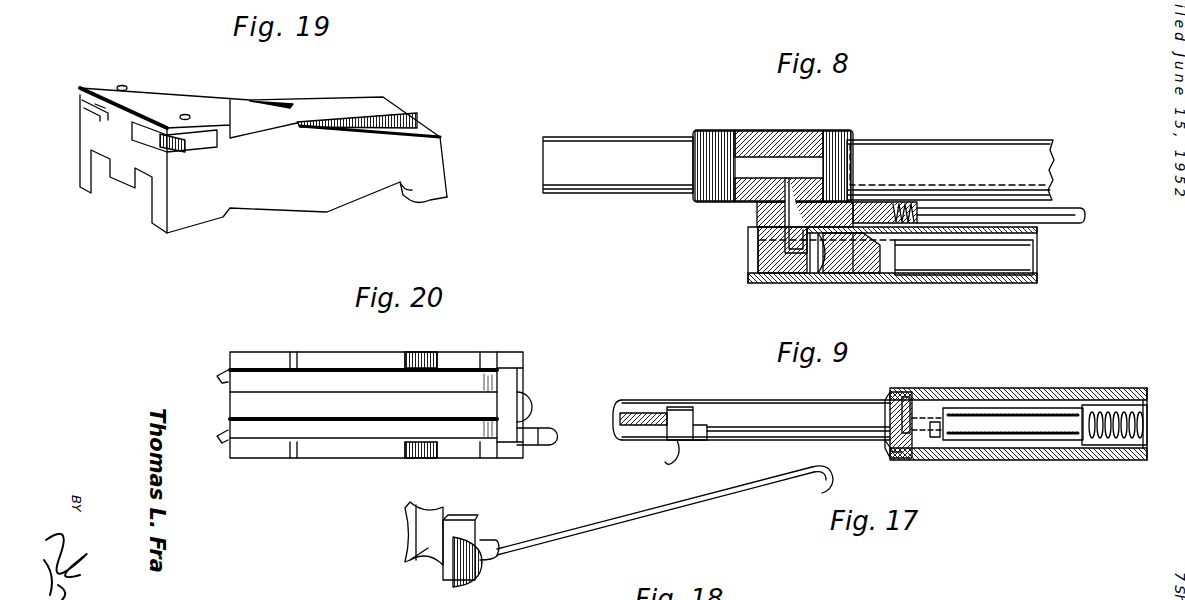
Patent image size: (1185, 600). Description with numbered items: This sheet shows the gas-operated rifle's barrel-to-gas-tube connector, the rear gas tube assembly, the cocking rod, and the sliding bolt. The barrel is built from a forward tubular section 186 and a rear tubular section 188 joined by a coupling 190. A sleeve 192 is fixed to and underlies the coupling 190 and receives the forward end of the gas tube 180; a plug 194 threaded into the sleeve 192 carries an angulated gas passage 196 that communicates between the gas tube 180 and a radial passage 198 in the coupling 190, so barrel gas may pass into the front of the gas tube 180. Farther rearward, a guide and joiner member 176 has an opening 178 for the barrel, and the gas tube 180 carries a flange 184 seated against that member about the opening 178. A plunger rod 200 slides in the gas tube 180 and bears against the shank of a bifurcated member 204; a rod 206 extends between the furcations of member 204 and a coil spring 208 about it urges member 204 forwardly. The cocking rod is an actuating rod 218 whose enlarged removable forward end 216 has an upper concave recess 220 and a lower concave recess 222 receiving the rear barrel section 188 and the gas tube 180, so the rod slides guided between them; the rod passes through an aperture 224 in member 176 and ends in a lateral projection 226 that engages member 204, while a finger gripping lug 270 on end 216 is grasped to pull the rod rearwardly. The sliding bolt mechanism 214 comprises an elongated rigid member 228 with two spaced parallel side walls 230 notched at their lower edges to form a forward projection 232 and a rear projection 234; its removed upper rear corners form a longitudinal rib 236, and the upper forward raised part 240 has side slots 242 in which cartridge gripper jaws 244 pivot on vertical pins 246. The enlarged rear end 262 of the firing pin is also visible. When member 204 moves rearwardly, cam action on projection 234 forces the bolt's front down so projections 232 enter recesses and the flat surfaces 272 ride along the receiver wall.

In FIG. 9, the guide and joiner member 176 is at (885, 405).
In FIG. 9, the opening 178 is at (895, 388).
In FIG. 8, the gas tube 180 is at (1003, 285).
In FIG. 9, the gas tube 180 is at (748, 408).
In FIG. 9, the flange 184 is at (915, 405).
In FIG. 8, the forward tubular section 186 is at (645, 188).
In FIG. 8, the rear tubular section 188 is at (925, 120).
In FIG. 8, the coupling 190 is at (780, 130).
In FIG. 9, the coupling 190 is at (640, 435).
In FIG. 8, the sleeve 192 is at (792, 285).
In FIG. 8, the plug 194 is at (758, 250).
In FIG. 8, the angulated gas passage 196 is at (760, 275).
In FIG. 8, the radial passage 198 is at (770, 212).
In FIG. 9, the radial passage 198 is at (655, 412).
In FIG. 8, the plunger rod 200 is at (1033, 260).
In FIG. 9, the bifurcated member 204 is at (1095, 447).
In FIG. 9, the rod 206 is at (1128, 448).
In FIG. 9, the coil spring 208 is at (1120, 415).
In FIG. 19, the sliding bolt mechanism 214 is at (327, 90).
In FIG. 20, the sliding bolt mechanism 214 is at (453, 349).
In FIG. 8, the enlarged removable forward end 216 is at (868, 206).
In FIG. 9, the enlarged removable forward end 216 is at (690, 410).
In FIG. 17, the enlarged removable forward end 216 is at (423, 538).
In FIG. 8, the actuating rod 218 is at (1050, 210).
In FIG. 9, the actuating rod 218 is at (742, 437).
In FIG. 17, the actuating rod 218 is at (633, 518).
In FIG. 17, the upper concave recess 220 is at (455, 513).
In FIG. 17, the lower concave recess 222 is at (427, 560).
In FIG. 9, the aperture 224 is at (893, 452).
In FIG. 9, the lateral projection 226 is at (935, 440).
In FIG. 17, the lateral projection 226 is at (812, 468).
In FIG. 19, the elongated rigid member 228 is at (230, 107).
In FIG. 19, the side walls 230 is at (398, 165).
In FIG. 20, the side walls 230 is at (315, 350).
In FIG. 19, the forward projection 232 is at (193, 220).
In FIG. 19, the rear projection 234 is at (428, 200).
In FIG. 19, the longitudinal rib 236 is at (418, 113).
In FIG. 19, the upper forward raised part 240 is at (182, 96).
In FIG. 19, the side slots 242 is at (83, 113).
In FIG. 19, the cartridge gripper jaws 244 is at (83, 101).
In FIG. 20, the cartridge gripper jaws 244 is at (216, 365).
In FIG. 19, the vertical pins 246 is at (184, 115).
In FIG. 20, the enlarged rear end 262 is at (525, 405).
In FIG. 9, the finger gripping lug 270 is at (680, 458).
In FIG. 17, the finger gripping lug 270 is at (480, 583).
In FIG. 19, the flat surfaces 272 is at (347, 128).